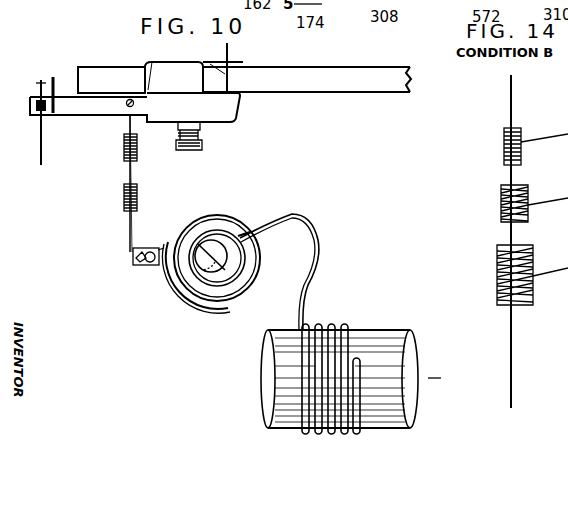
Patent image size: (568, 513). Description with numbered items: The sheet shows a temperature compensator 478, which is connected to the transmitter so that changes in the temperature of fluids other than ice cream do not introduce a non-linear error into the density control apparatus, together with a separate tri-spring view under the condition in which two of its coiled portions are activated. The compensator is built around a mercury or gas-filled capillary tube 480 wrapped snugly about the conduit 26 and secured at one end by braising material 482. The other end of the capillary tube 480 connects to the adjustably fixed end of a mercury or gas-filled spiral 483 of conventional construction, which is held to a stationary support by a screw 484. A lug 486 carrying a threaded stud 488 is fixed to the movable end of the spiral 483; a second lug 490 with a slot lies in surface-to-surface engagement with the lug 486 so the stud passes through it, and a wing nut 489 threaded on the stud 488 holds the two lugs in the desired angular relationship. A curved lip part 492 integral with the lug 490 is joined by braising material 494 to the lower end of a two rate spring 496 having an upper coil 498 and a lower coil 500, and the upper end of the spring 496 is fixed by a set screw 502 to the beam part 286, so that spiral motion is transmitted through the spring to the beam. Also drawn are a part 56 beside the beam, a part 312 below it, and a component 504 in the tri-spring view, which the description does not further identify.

In FIG. 10, the beam part 286 is at (67, 100).
In FIG. 10, the rod 56 is at (41, 137).
In FIG. 10, the set screw 502 is at (128, 105).
In FIG. 10, the nut 312 is at (256, 110).
In FIG. 10, the two rate spring 496 is at (112, 182).
In FIG. 10, the upper coil 498 is at (123, 150).
In FIG. 10, the lower coil 500 is at (122, 200).
In FIG. 10, the wing nut 489 is at (134, 254).
In FIG. 10, the braising material 494 is at (136, 262).
In FIG. 10, the second lug 490 is at (147, 263).
In FIG. 10, the curved lip part 492 is at (140, 250).
In FIG. 10, the lug 486 is at (157, 250).
In FIG. 10, the threaded stud 488 is at (168, 280).
In FIG. 10, the temperature compensator 478 is at (245, 200).
In FIG. 10, the screw 484 is at (213, 272).
In FIG. 10, the spiral 483 is at (250, 232).
In FIG. 10, the capillary tube 480 is at (308, 294).
In FIG. 10, the conduit 26 is at (280, 330).
In FIG. 10, the braising material 482 is at (358, 345).
In FIG. 14, the spring assembly 504 is at (488, 196).